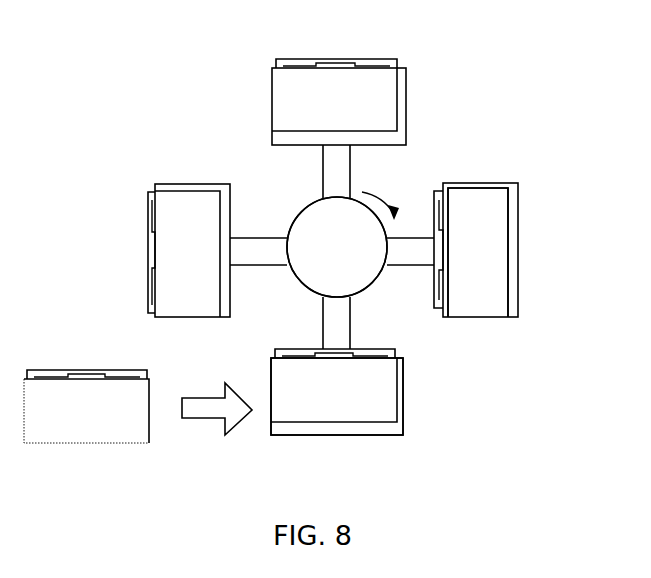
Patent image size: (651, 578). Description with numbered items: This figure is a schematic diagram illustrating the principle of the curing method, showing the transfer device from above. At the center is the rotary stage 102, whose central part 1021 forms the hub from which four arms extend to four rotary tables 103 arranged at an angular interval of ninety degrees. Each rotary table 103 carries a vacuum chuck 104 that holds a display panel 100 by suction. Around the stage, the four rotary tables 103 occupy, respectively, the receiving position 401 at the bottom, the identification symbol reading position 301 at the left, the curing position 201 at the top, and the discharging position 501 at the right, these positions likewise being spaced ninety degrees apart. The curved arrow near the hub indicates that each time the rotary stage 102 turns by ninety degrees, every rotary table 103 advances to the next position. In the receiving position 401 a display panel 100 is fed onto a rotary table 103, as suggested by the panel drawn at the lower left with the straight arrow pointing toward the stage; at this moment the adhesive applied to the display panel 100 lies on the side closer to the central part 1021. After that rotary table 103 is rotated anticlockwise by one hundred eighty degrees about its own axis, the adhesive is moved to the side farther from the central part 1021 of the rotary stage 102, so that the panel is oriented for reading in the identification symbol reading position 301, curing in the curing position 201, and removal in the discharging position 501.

The display panel 100 is at (107, 426).
The rotary stage 102 is at (373, 283).
The central part 1021 is at (348, 282).
The rotary table 103 is at (403, 428).
The vacuum chuck 104 is at (513, 302).
The curing position 201 is at (350, 38).
The identification symbol reading position 301 is at (123, 266).
The receiving position 401 is at (362, 477).
The discharging position 501 is at (575, 263).